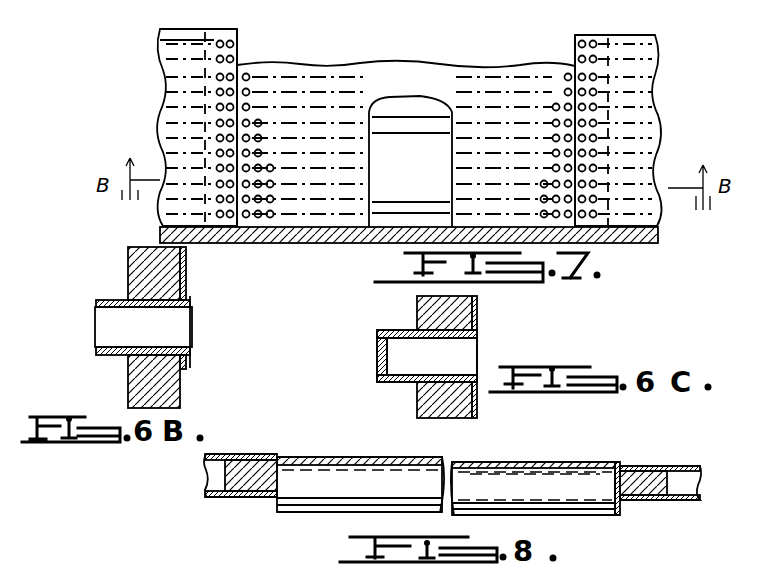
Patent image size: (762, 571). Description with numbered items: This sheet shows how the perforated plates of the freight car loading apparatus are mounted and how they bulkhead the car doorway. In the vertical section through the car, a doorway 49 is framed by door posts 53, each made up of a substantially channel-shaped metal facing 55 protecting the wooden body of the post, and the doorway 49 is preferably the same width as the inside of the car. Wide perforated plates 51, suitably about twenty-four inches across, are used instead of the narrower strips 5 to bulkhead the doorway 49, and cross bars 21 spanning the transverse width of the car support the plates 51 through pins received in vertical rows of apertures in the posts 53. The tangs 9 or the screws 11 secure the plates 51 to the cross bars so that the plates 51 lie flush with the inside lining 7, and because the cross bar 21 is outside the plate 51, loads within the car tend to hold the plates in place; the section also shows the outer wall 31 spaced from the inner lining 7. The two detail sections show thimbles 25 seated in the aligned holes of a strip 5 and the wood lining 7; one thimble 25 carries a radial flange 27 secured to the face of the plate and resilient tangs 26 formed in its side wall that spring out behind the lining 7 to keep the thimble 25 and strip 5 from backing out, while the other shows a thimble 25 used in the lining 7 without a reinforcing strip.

In FIG. 7, the metal strip 5 is at (658, 92).
In FIG. 6B, the metal strip 5 is at (186, 262).
In FIG. 8, the metal strip 5 is at (622, 468).
In FIG. 6B, the inside wall or lining 7 is at (128, 264).
In FIG. 6C, the inside wall or lining 7 is at (458, 308).
In FIG. 8, the inside wall or lining 7 is at (205, 474).
In FIG. 8, the non-skid tang 9 is at (545, 482).
In FIG. 8, the screw 11 is at (478, 462).
In FIG. 7, the cross bar 21 is at (430, 136).
In FIG. 6B, the thimble 25 is at (89, 345).
In FIG. 6C, the thimble 25 is at (487, 334).
In FIG. 6B, the resilient tang 26 is at (108, 300).
In FIG. 6B, the radial flange 27 is at (192, 298).
In FIG. 8, the outer wall 31 is at (236, 498).
In FIG. 7, the doorway 49 is at (576, 50).
In FIG. 8, the doorway 49 is at (613, 513).
In FIG. 7, the plate 51 is at (288, 70).
In FIG. 8, the plate 51 is at (402, 457).
In FIG. 8, the door post 53 is at (235, 460).
In FIG. 8, the channel-shaped metal facing 55 is at (335, 477).